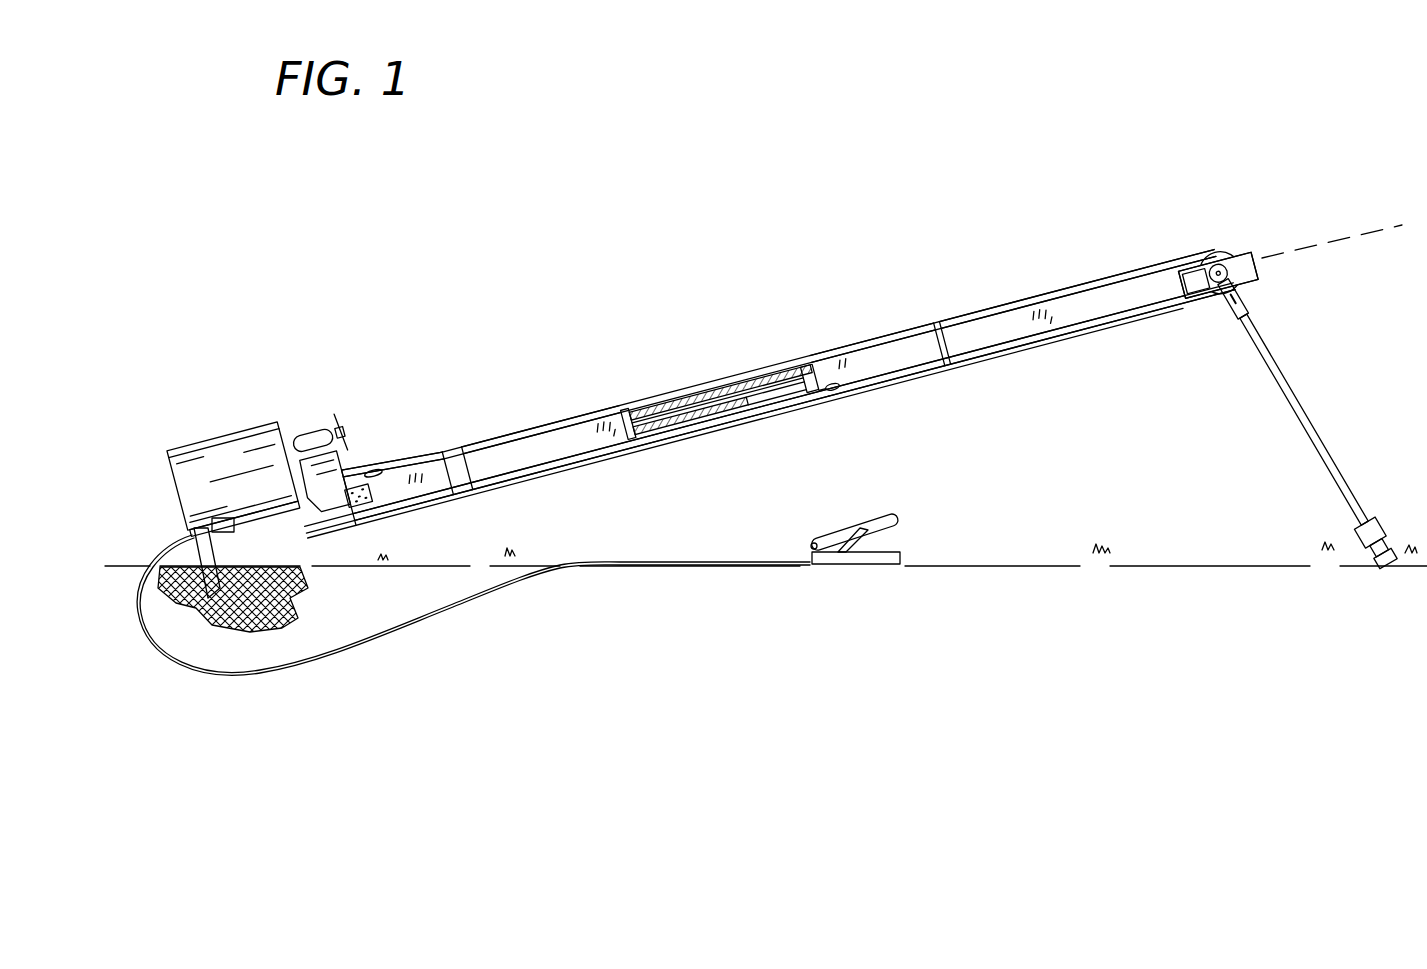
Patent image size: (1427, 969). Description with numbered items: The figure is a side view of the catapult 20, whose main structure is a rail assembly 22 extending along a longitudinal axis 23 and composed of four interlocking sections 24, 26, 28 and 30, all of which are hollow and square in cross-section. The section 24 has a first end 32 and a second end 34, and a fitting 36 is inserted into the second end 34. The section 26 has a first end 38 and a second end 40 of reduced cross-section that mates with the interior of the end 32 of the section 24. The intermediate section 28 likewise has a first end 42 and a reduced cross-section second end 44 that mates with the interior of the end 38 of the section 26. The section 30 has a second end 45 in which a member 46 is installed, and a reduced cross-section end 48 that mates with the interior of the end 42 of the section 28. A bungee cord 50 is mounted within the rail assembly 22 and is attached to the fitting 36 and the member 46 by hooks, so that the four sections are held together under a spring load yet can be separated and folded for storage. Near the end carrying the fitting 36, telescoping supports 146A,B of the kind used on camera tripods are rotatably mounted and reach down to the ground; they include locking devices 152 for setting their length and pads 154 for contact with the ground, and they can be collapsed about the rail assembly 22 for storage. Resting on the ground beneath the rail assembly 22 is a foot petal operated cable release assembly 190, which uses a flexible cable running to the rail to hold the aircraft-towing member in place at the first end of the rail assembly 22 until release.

The catapult 20 is at (644, 248).
The rail assembly 22 is at (778, 372).
The longitudinal axis 23 is at (1350, 235).
The section 24 is at (1005, 352).
The section 26 is at (830, 390).
The intermediate section 28 is at (590, 457).
The section 30 is at (445, 492).
The first end 32 is at (955, 322).
The second end 34 is at (1182, 302).
The fitting 36 is at (1245, 256).
The first end 38 is at (714, 392).
The second end 40 is at (922, 333).
The first end 42 is at (490, 440).
The second end 44 is at (680, 396).
The second end 45 is at (246, 541).
The member 46 is at (336, 516).
The reduced cross-section end 48 is at (440, 455).
The bungee cord 50 is at (792, 402).
The telescoping supports 146A,B is at (1300, 425).
The locking devices 152 is at (1372, 526).
The pads 154 is at (1380, 568).
The foot petal operated cable release assembly 190 is at (898, 512).